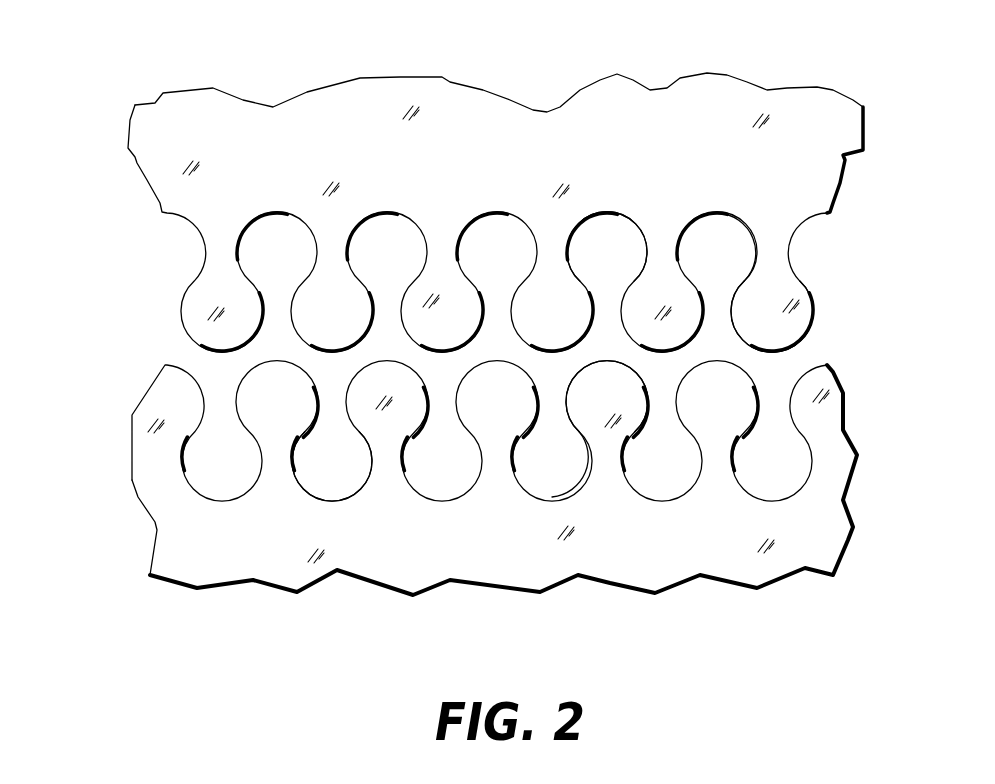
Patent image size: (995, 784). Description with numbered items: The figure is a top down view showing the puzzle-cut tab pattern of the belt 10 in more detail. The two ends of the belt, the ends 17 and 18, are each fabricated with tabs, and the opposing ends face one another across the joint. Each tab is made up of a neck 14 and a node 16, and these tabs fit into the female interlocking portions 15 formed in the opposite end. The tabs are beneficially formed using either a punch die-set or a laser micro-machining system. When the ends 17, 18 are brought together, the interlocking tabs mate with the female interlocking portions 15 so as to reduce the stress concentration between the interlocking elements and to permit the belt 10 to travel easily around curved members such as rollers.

The sheet material strip 10 is at (459, 334).
The neck 14 is at (757, 253).
The female interlocking portion 15 is at (609, 230).
The node 16 is at (813, 310).
The end 17 is at (155, 162).
The end 18 is at (155, 473).